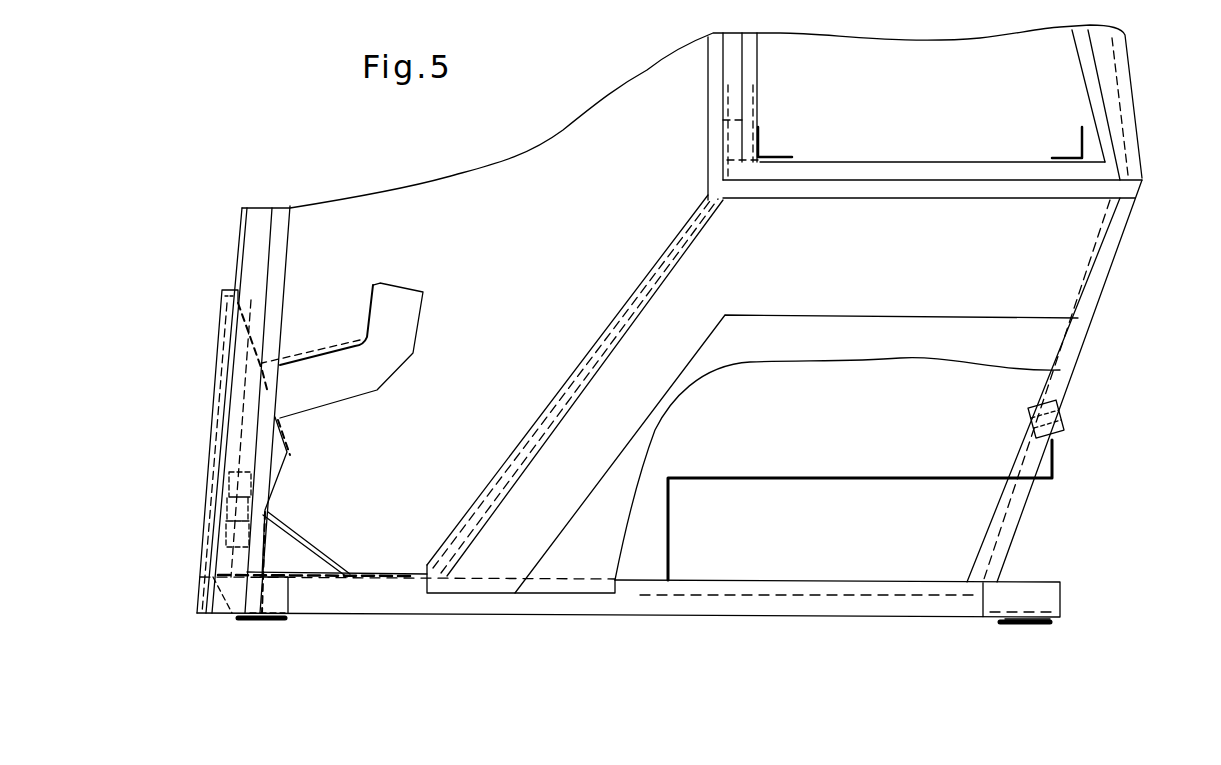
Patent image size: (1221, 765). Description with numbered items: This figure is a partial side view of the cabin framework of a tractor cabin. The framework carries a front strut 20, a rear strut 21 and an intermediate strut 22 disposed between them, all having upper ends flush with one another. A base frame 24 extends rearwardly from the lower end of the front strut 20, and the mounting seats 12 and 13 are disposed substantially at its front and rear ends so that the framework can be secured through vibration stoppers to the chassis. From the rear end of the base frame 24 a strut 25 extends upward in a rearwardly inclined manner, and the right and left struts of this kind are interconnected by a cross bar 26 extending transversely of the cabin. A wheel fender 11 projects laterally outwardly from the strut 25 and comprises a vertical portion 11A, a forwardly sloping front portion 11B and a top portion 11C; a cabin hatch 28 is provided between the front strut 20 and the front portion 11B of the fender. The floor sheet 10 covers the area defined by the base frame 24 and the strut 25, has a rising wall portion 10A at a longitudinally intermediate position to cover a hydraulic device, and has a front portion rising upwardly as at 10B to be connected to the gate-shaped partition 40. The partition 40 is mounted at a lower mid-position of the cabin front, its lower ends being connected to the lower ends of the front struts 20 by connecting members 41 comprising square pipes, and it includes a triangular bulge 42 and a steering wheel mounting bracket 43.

The floor sheet 10 is at (640, 582).
The rising wall portion 10A is at (672, 534).
The rising front portion of the floor sheet 10B is at (305, 550).
The wheel fender 11 is at (1142, 222).
The vertical portion 11A is at (1065, 258).
The front portion 11B is at (534, 406).
The top portion 11C is at (1130, 190).
The mounting seat 12 is at (228, 619).
The mounting seat 13 is at (1035, 624).
The front strut 20 is at (238, 270).
The rear strut 21 is at (1128, 110).
The intermediate strut 22 is at (738, 100).
The base frame 24 is at (512, 605).
The strut 25 is at (1090, 340).
The cross bar 26 is at (1060, 410).
The cabin hatch 28 is at (413, 553).
The gate-shaped partition 40 is at (218, 428).
The connecting member 41 is at (203, 545).
The triangular bulge 42 is at (274, 462).
The steering wheel mounting bracket 43 is at (343, 388).